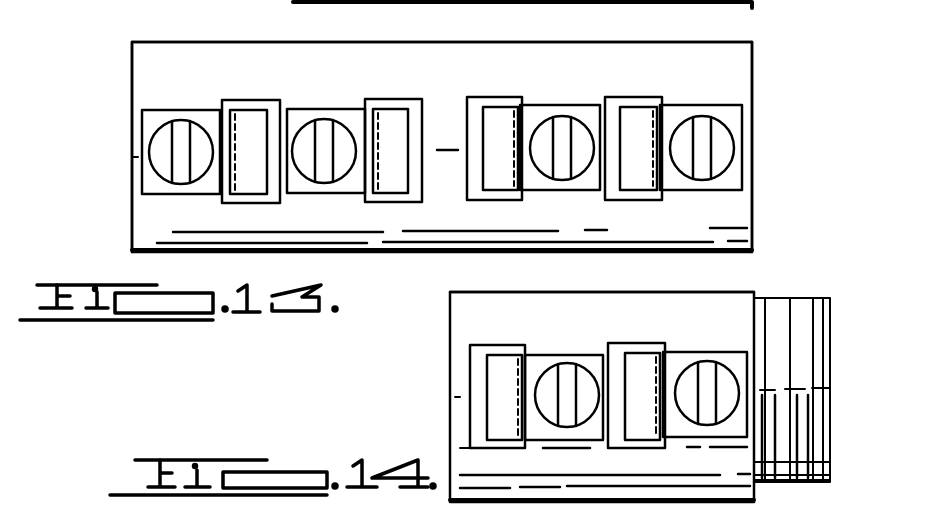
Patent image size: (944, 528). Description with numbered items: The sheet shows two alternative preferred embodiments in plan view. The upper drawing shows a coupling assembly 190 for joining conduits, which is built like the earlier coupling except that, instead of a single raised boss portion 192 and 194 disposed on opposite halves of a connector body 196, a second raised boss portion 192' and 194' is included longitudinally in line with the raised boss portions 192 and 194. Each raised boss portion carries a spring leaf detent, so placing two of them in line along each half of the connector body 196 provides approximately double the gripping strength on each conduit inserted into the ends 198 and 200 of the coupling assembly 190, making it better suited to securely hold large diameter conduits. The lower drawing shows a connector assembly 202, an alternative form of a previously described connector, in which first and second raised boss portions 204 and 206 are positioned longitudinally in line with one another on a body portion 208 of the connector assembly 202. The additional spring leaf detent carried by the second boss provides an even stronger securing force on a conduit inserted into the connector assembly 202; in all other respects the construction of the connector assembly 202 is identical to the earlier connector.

In FIG. 13, the coupling assembly 190 is at (104, 68).
In FIG. 13, the raised boss portion 192 is at (326, 123).
In FIG. 13, the second raised boss portion 192' is at (126, 190).
In FIG. 13, the raised boss portion 194 is at (560, 117).
In FIG. 13, the second raised boss portion 194' is at (684, 173).
In FIG. 13, the connector body 196 is at (267, 36).
In FIG. 13, the end 198 is at (120, 214).
In FIG. 13, the end 200 is at (762, 205).
In FIG. 14, the connector assembly 202 is at (430, 386).
In FIG. 14, the first raised boss portion 204 is at (699, 350).
In FIG. 14, the second raised boss portion 206 is at (554, 352).
In FIG. 14, the body portion 208 is at (706, 292).